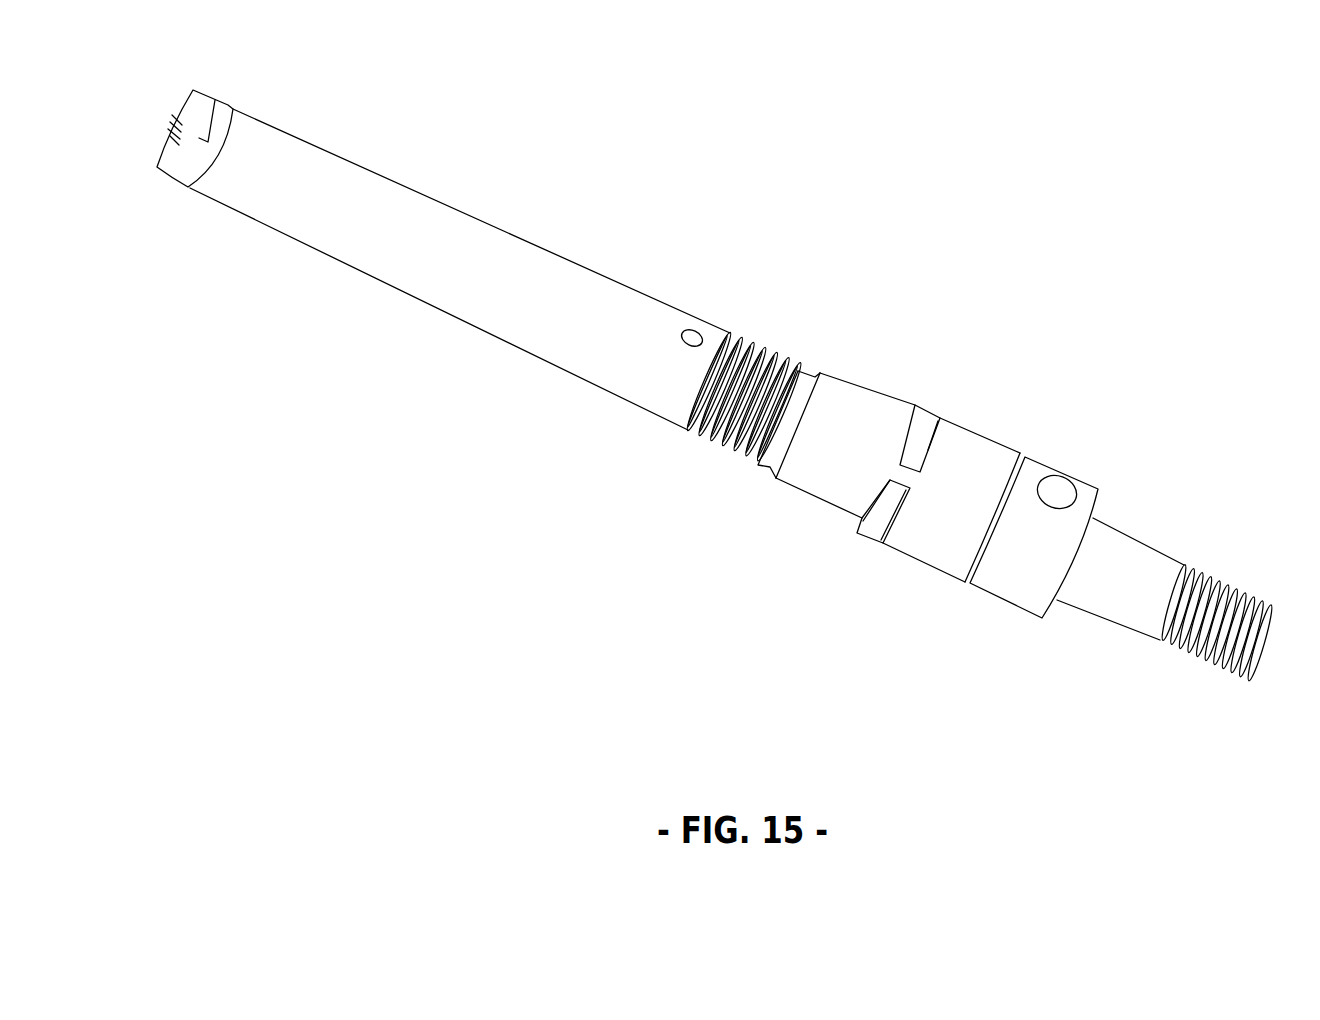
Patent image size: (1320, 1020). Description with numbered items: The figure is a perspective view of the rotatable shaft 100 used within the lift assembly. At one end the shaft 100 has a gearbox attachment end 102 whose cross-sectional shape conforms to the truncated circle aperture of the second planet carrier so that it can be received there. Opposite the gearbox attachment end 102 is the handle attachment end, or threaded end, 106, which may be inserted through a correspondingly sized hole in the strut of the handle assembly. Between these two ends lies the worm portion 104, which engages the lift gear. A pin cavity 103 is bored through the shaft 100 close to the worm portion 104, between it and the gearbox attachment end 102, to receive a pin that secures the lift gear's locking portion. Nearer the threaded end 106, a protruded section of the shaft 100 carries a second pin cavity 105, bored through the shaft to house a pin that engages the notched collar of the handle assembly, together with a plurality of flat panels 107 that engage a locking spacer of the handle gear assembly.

The rotatable shaft 100 is at (1050, 173).
The gearbox attachment end 102 is at (193, 128).
The pin cavity 103 is at (692, 331).
The worm portion 104 is at (722, 460).
The second pin cavity 105 is at (1057, 490).
The threaded end 106 is at (1200, 657).
The flat panels 107 is at (878, 517).